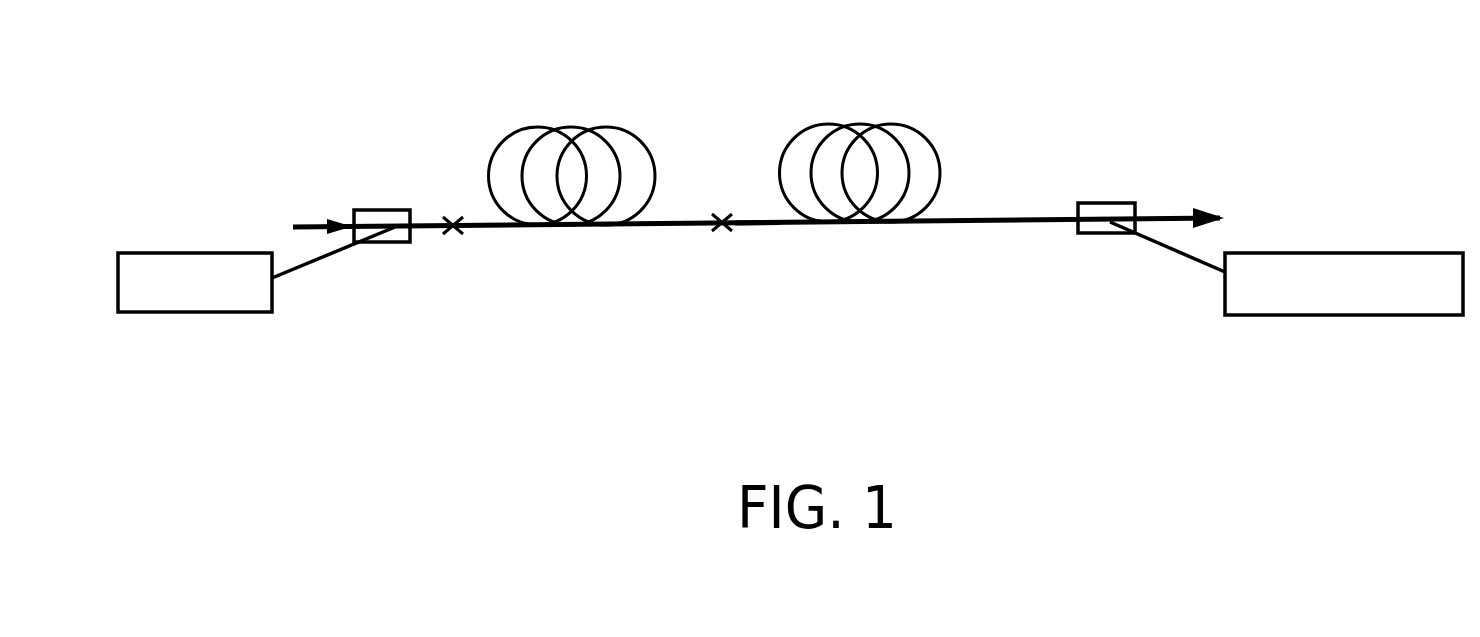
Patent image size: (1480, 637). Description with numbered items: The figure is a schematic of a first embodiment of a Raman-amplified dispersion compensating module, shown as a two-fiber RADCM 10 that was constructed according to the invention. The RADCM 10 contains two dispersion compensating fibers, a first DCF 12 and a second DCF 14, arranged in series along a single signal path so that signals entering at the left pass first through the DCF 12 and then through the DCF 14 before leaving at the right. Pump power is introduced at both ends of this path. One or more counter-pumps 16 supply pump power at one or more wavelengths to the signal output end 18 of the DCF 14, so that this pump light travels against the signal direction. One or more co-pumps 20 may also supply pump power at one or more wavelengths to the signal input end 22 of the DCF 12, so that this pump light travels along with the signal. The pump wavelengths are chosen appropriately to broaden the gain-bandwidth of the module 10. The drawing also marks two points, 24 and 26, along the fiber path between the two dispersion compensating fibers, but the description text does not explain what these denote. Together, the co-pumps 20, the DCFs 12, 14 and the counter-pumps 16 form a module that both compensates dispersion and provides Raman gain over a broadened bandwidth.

The two-fiber RADCM 10 is at (757, 313).
The dispersion compensating fiber 12 is at (492, 162).
The dispersion compensating fiber 14 is at (933, 150).
The counter-pumps 16 is at (1225, 297).
The signal output end 18 is at (1025, 230).
The co-pumps 20 is at (272, 297).
The signal input end 22 is at (455, 232).
The mid-stage isolator 24 is at (698, 228).
The fiber span between stages 26 is at (752, 228).